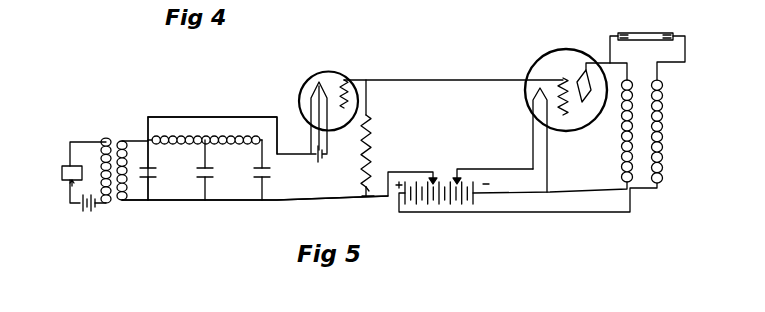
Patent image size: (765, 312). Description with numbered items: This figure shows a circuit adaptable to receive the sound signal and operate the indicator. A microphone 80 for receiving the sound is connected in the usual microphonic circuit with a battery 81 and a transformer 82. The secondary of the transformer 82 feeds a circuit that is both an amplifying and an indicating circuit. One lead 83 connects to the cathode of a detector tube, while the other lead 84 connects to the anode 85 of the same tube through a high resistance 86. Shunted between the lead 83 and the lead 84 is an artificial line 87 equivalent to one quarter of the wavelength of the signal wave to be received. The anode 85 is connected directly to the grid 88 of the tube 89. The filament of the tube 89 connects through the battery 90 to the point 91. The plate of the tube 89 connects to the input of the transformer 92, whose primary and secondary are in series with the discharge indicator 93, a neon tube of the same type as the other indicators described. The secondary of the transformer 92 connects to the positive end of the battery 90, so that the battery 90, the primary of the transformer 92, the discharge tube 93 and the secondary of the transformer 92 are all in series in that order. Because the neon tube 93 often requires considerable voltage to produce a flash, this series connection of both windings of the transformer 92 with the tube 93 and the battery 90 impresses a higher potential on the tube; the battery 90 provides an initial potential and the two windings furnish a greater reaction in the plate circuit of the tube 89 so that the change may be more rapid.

The microphone 80 is at (62, 179).
The battery 81 is at (90, 216).
The transformer 82 is at (108, 136).
The lead 83 is at (188, 115).
The lead 84 is at (282, 202).
The anode 85 is at (337, 72).
The high resistance 86 is at (372, 133).
The artificial line 87 is at (206, 137).
The grid 88 is at (565, 74).
The tube 89 is at (542, 48).
The battery 90 is at (442, 208).
The point 91 is at (370, 197).
The transformer 92 is at (642, 182).
The discharge indicator 93 is at (641, 33).